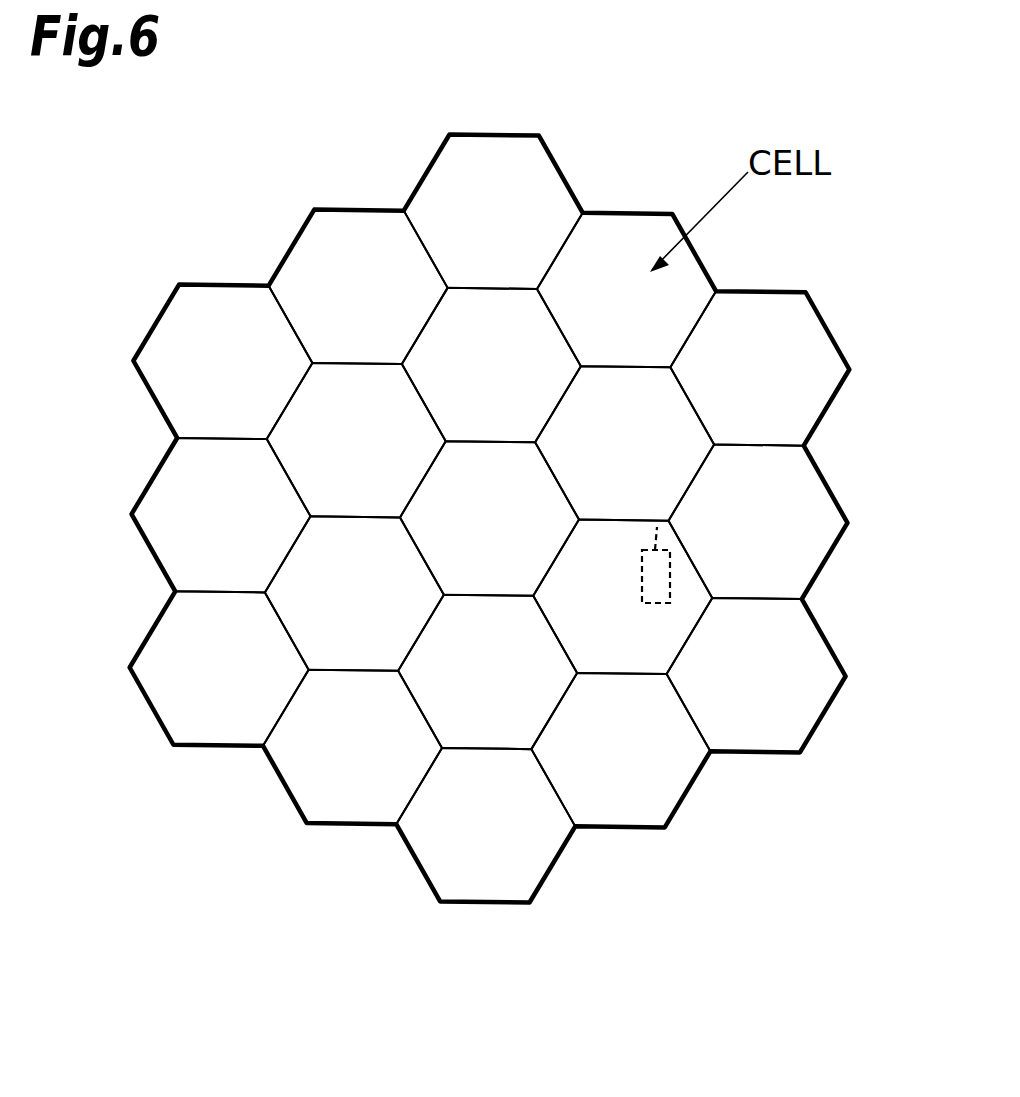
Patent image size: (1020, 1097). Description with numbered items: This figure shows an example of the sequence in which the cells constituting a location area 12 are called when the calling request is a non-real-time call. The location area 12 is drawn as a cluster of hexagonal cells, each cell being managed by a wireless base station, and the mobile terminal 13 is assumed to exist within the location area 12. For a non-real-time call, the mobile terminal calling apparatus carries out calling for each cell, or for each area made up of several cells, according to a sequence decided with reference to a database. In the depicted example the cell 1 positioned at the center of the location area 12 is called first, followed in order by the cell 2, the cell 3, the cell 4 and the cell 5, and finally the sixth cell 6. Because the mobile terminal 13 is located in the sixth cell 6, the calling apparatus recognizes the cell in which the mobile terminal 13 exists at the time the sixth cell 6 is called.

The cell 1 is at (489, 519).
The cell 2 is at (491, 365).
The cell 3 is at (356, 440).
The cell 4 is at (354, 594).
The cell 5 is at (487, 672).
The sixth cell 6 is at (622, 597).
The location area 12 is at (155, 318).
The mobile terminal 13 is at (670, 573).